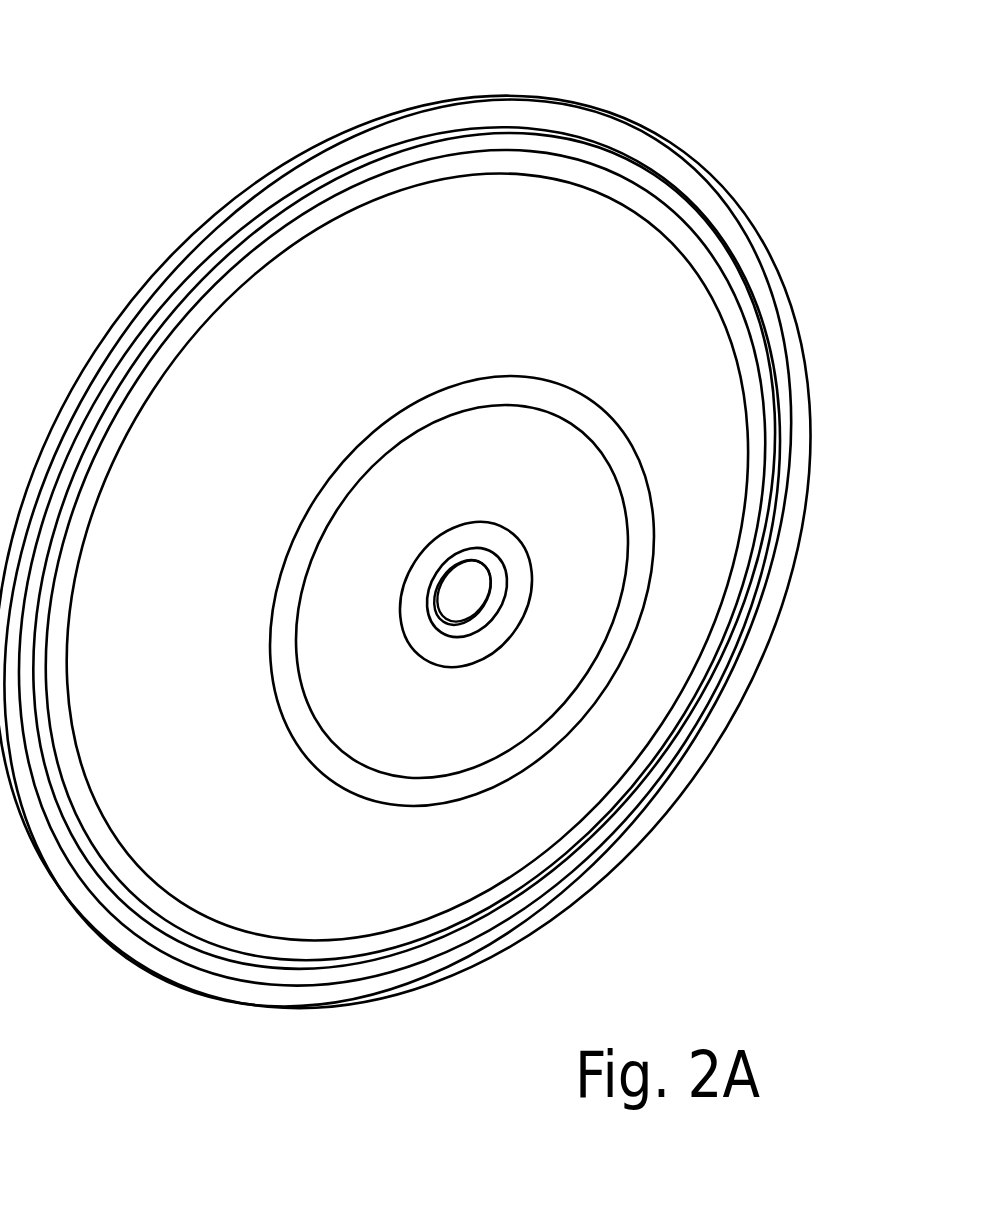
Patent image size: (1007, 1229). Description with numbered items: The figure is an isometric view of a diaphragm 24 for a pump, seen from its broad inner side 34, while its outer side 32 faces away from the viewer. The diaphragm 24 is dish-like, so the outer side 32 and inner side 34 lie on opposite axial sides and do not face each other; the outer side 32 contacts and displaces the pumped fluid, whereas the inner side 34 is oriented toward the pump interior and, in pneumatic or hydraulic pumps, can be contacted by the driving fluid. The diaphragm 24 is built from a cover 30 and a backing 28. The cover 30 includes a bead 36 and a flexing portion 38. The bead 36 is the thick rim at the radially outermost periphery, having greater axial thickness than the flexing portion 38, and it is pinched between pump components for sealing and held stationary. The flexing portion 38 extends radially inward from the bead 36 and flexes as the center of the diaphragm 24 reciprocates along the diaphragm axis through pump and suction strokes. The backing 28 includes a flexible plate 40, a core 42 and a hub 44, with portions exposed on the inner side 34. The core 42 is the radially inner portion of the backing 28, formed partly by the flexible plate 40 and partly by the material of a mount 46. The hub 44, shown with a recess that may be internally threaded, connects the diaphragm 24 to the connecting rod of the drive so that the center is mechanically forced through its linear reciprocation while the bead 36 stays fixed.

The diaphragm 24 is at (123, 120).
The backing 28 is at (521, 626).
The cover 30 is at (633, 262).
The outer side 32 is at (336, 133).
The inner side 34 is at (700, 410).
The bead 36 is at (535, 112).
The flexing portion 38 is at (706, 573).
The flexible plate 40 is at (429, 664).
The core 42 is at (465, 662).
The hub 44 is at (477, 613).
The mount 46 is at (498, 583).